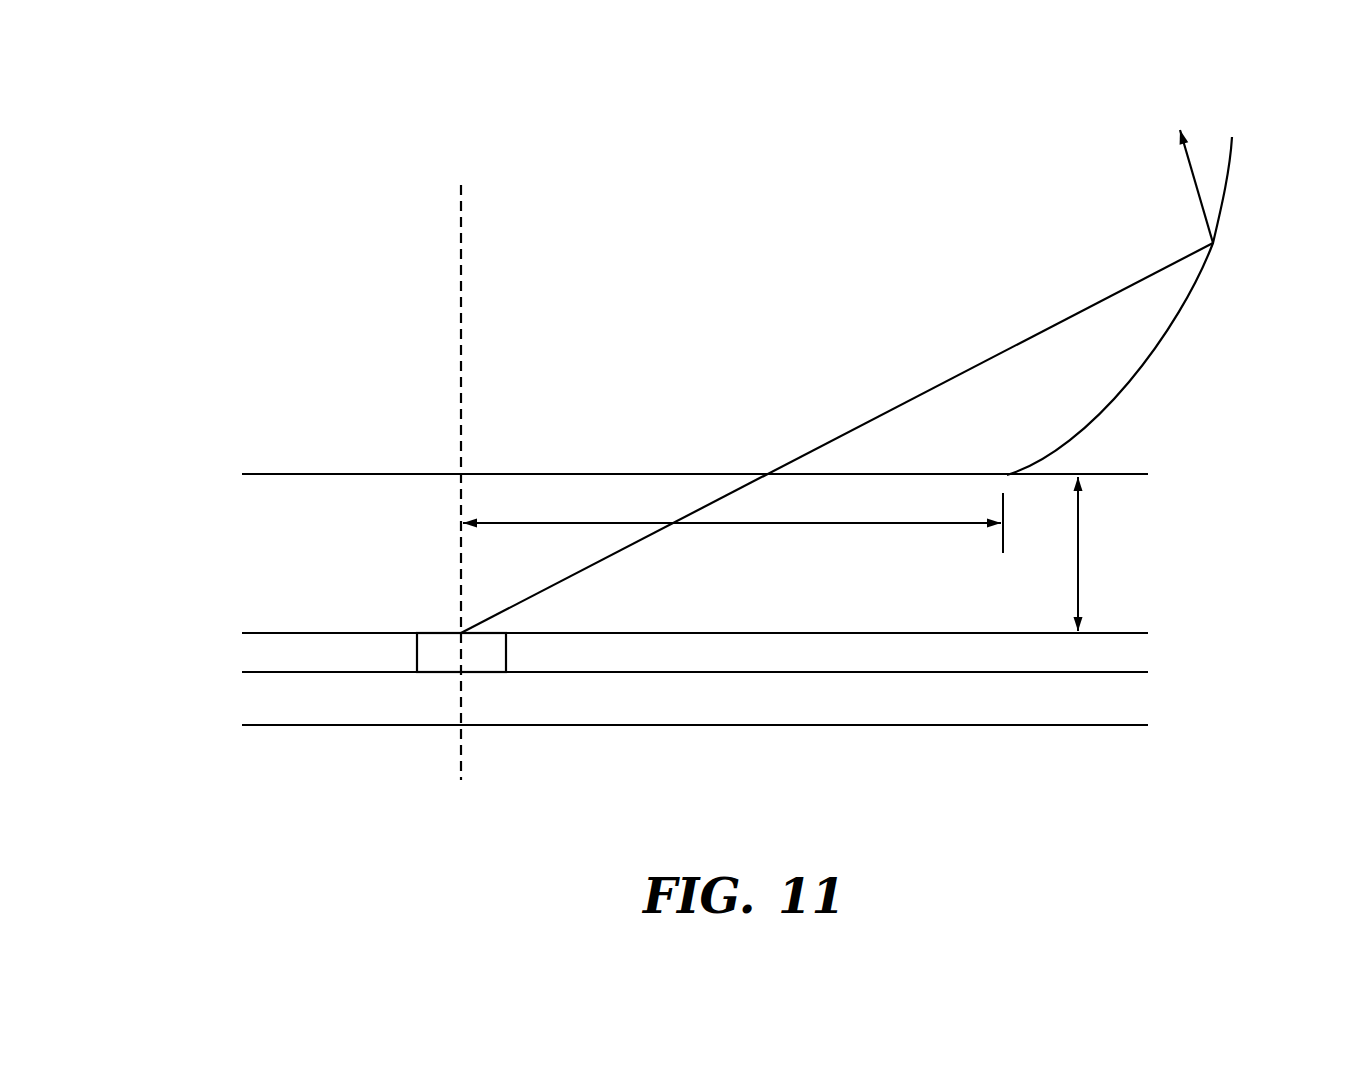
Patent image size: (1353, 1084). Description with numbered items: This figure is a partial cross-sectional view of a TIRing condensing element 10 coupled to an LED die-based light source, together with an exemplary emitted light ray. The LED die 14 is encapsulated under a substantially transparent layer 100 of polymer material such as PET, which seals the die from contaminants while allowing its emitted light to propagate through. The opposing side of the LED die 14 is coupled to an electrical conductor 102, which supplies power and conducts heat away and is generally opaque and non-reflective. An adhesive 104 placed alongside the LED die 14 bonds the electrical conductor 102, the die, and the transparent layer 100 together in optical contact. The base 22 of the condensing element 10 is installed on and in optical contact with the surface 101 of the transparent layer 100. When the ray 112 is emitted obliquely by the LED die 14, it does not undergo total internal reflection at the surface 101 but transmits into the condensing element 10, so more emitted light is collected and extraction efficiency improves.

The TIRing condensing element 10 is at (258, 232).
The LED die 14 is at (437, 658).
The base 22 is at (601, 474).
The transparent layer 100 is at (263, 524).
The surface 101 is at (299, 473).
The electrical conductor 102 is at (263, 698).
The adhesive 104 is at (263, 653).
The ray 112 is at (933, 386).